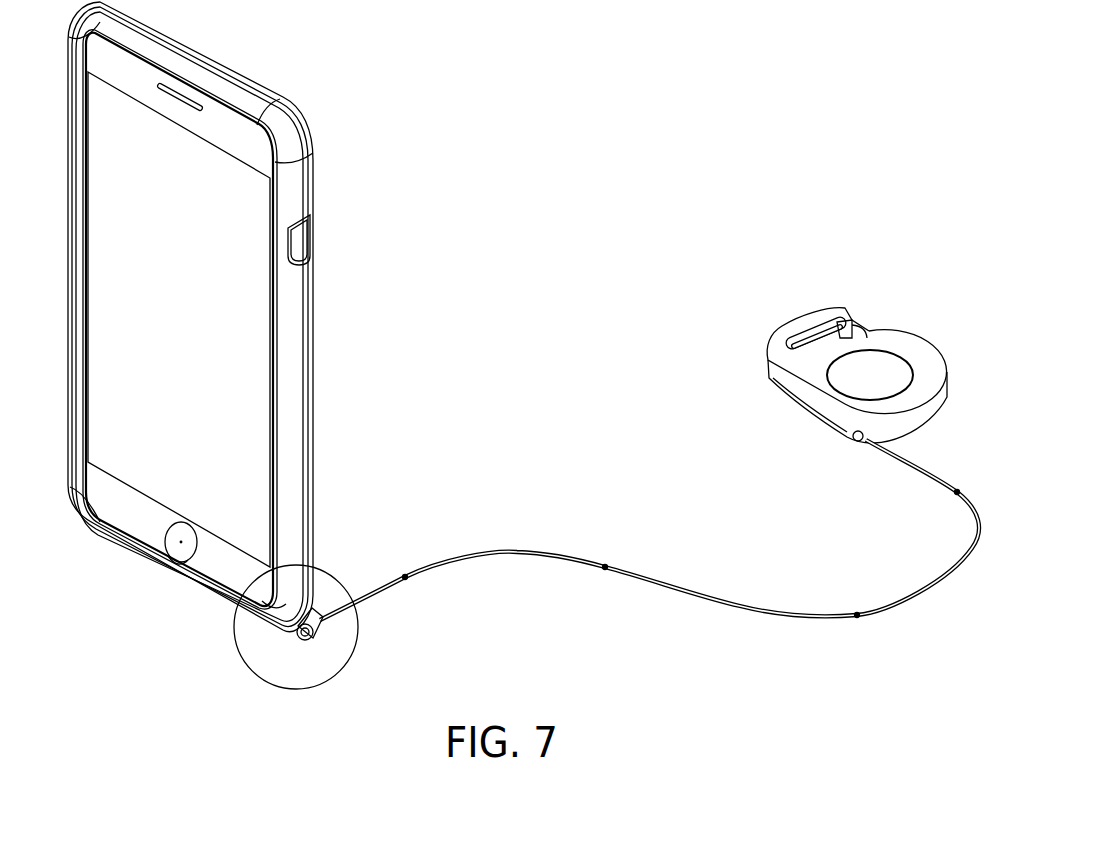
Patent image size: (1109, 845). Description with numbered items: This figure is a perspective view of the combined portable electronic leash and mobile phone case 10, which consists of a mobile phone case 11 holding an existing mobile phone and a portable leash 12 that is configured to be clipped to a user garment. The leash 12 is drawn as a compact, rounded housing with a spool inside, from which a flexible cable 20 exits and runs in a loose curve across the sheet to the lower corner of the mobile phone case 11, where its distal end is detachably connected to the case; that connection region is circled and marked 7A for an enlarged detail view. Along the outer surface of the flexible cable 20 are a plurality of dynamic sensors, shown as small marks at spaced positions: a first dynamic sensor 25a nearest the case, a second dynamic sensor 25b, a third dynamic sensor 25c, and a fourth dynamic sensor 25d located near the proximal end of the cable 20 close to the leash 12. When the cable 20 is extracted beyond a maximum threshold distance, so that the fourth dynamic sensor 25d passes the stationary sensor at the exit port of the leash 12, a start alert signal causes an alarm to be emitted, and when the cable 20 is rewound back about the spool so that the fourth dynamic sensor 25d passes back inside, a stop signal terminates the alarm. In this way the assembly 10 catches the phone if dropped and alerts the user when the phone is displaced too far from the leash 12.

The combined portable electronic leash and mobile phone case 10 is at (628, 130).
The mobile phone case 11 is at (302, 352).
The portable leash 12 is at (787, 350).
The flexible cable 20 is at (732, 605).
The dynamic sensor 25a is at (405, 575).
The dynamic sensor 25b is at (605, 565).
The dynamic sensor 25c is at (857, 613).
The fourth dynamic sensor 25d is at (957, 493).
The detail view callout 7A is at (243, 660).